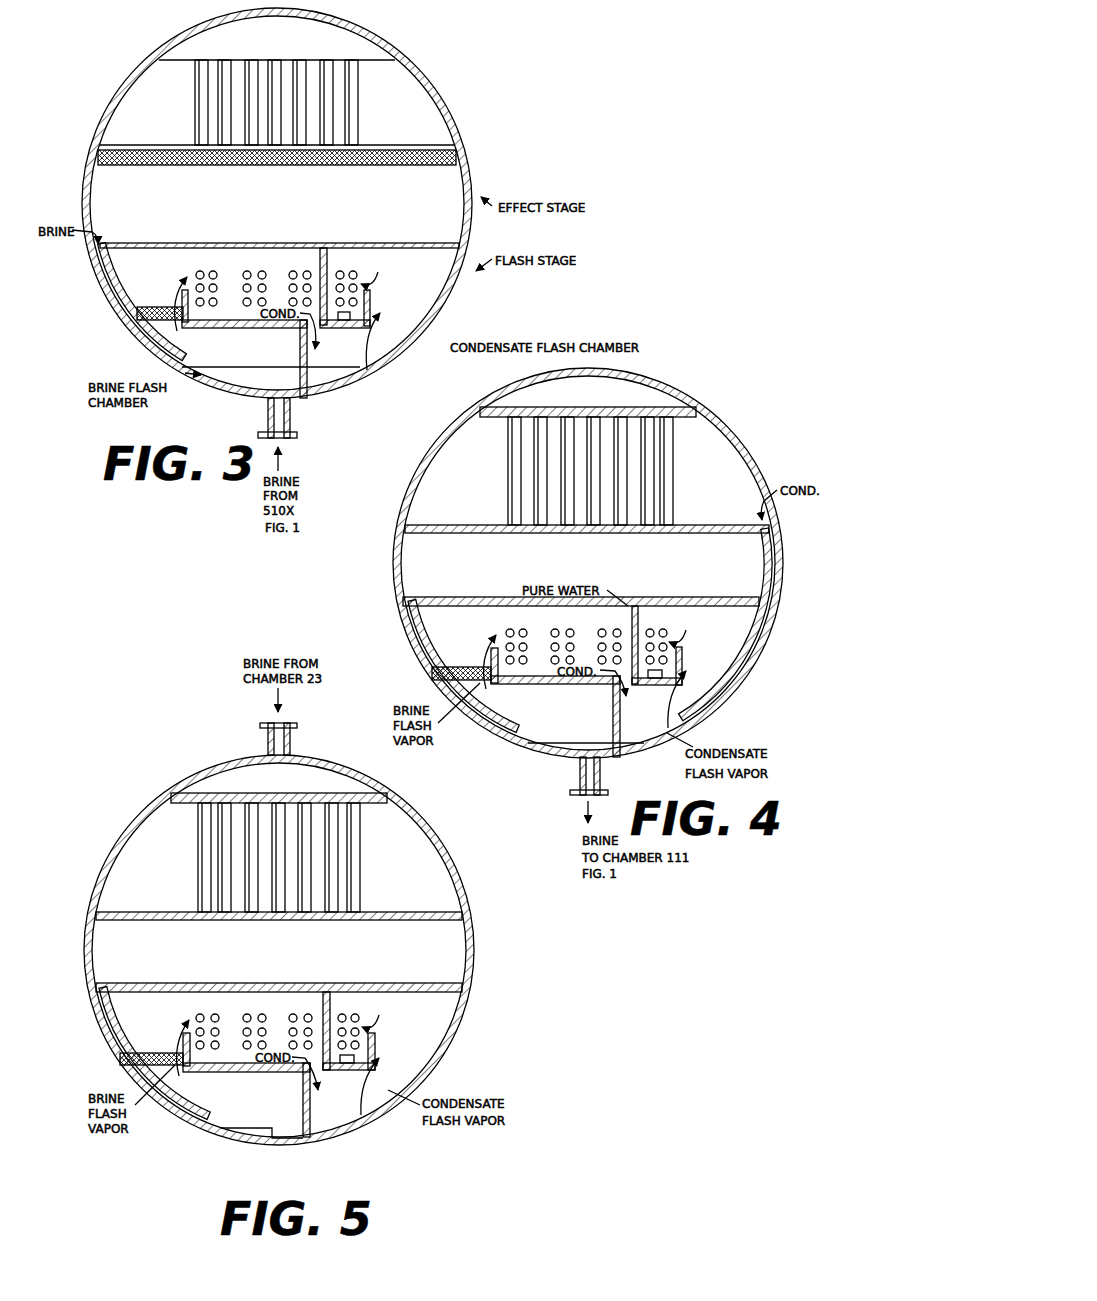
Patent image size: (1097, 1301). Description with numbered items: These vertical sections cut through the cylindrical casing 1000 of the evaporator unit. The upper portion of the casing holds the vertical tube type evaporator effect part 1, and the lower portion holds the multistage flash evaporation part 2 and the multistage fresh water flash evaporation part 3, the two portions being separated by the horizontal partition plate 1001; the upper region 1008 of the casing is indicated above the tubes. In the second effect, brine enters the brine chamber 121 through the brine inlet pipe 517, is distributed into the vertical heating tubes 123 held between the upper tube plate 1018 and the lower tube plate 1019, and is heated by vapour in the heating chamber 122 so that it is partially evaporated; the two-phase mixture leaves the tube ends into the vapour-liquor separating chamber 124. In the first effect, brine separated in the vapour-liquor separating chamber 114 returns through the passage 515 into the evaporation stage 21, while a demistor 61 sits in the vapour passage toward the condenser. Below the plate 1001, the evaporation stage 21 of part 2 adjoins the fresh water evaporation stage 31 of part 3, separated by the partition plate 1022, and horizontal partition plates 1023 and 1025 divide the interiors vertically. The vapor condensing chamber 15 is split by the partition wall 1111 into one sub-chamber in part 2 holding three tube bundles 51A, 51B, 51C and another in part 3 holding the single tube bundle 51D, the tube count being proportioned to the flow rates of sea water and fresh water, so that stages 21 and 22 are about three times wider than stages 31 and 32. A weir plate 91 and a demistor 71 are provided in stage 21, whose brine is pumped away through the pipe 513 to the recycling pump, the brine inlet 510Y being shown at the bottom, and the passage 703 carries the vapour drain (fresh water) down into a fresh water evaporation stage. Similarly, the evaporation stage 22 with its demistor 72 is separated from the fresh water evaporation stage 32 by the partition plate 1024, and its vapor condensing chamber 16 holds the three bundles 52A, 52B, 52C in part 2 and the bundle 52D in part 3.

In FIG. 3, the cylindrical casing 1000 is at (277, 203).
In FIG. 4, the cylindrical casing 1000 is at (588, 557).
In FIG. 5, the cylindrical casing 1000 is at (279, 950).
In FIG. 3, the vapor space of effect stage 1008 is at (400, 34).
In FIG. 3, the vertical tube type evaporator effect part 1 is at (107, 95).
In FIG. 3, the vertical heating tubes 123 is at (256, 102).
In FIG. 4, the vertical heating tubes 123 is at (569, 471).
In FIG. 5, the vertical heating tubes 123 is at (257, 857).
In FIG. 3, the heating chamber 122 is at (397, 106).
In FIG. 4, the heating chamber 122 is at (708, 489).
In FIG. 5, the heating chamber 122 is at (400, 876).
In FIG. 3, the demistor 61 is at (277, 173).
In FIG. 3, the vapour-liquor separating chamber 114 is at (278, 204).
In FIG. 3, the horizontal partition plate 1001 is at (279, 222).
In FIG. 4, the horizontal partition plate 1001 is at (581, 579).
In FIG. 5, the horizontal partition plate 1001 is at (279, 963).
In FIG. 3, the partition wall 1111 is at (358, 231).
In FIG. 4, the partition wall 1111 is at (660, 587).
In FIG. 5, the partition wall 1111 is at (358, 973).
In FIG. 3, the vapor condensing chamber 15 is at (125, 302).
In FIG. 4, the vapor condensing chamber 15 is at (441, 666).
In FIG. 3, the demistor 71 is at (160, 296).
In FIG. 4, the demistor 71 is at (461, 655).
In FIG. 3, the condensing heating tube bundle 51A is at (188, 279).
In FIG. 4, the condensing heating tube bundle 51A is at (498, 638).
In FIG. 3, the condensing heating tube bundle 51B is at (244, 279).
In FIG. 4, the condensing heating tube bundle 51B is at (552, 638).
In FIG. 3, the condensing heating tube bundle 51C is at (293, 279).
In FIG. 4, the condensing heating tube bundle 51C is at (602, 638).
In FIG. 3, the condensing heating tube bundle 51D is at (370, 279).
In FIG. 4, the condensing heating tube bundle 51D is at (679, 638).
In FIG. 3, the horizontal partition plate 1023 is at (400, 305).
In FIG. 4, the horizontal partition plate 1023 is at (707, 661).
In FIG. 3, the passage 515 is at (101, 324).
In FIG. 3, the evaporation stage 21 is at (225, 344).
In FIG. 4, the evaporation stage 21 is at (525, 712).
In FIG. 3, the partition plate 1022 is at (244, 344).
In FIG. 4, the partition plate 1022 is at (555, 702).
In FIG. 3, the fresh water evaporation stage 31 is at (345, 301).
In FIG. 4, the fresh water evaporation stage 31 is at (657, 662).
In FIG. 3, the multistage fresh water flash evaporation part 3 is at (420, 344).
In FIG. 3, the multistage flash evaporation part 2 is at (137, 365).
In FIG. 3, the weir plate 91 is at (215, 406).
In FIG. 3, the brine inlet nozzle 510Y is at (307, 418).
In FIG. 4, the brine chamber 121 is at (590, 392).
In FIG. 5, the brine chamber 121 is at (283, 776).
In FIG. 4, the upper tube plate 1018 is at (602, 433).
In FIG. 5, the upper tube plate 1018 is at (292, 821).
In FIG. 4, the lower tube plate 1019 is at (587, 508).
In FIG. 5, the lower tube plate 1019 is at (279, 896).
In FIG. 4, the vapour-liquor separating chamber 124 is at (583, 564).
In FIG. 5, the vapour-liquor separating chamber 124 is at (277, 947).
In FIG. 4, the passage 703 is at (725, 632).
In FIG. 4, the pipe 513 is at (565, 776).
In FIG. 5, the brine inlet pipe 517 is at (255, 739).
In FIG. 5, the vapor condensing chamber 16 is at (137, 1053).
In FIG. 5, the demistor 72 is at (151, 1043).
In FIG. 5, the condensing heating tube bundle 52A is at (188, 1022).
In FIG. 5, the condensing heating tube bundle 52B is at (242, 1022).
In FIG. 5, the condensing heating tube bundle 52C is at (291, 1022).
In FIG. 5, the condensing heating tube bundle 52D is at (368, 1022).
In FIG. 5, the horizontal partition plate 1025 is at (404, 1047).
In FIG. 5, the evaporation stage 22 is at (223, 1097).
In FIG. 5, the partition plate 1024 is at (246, 1085).
In FIG. 5, the fresh water evaporation stage 32 is at (349, 1049).